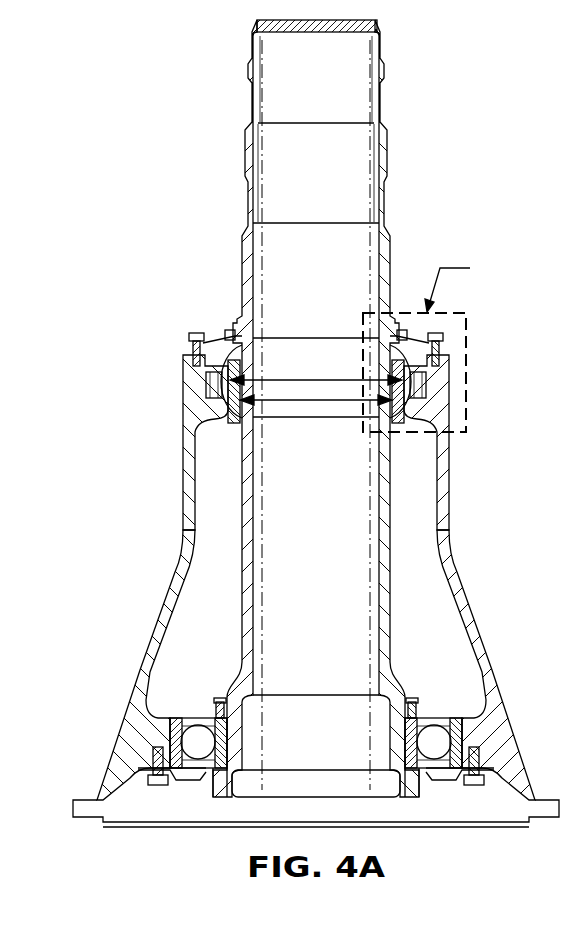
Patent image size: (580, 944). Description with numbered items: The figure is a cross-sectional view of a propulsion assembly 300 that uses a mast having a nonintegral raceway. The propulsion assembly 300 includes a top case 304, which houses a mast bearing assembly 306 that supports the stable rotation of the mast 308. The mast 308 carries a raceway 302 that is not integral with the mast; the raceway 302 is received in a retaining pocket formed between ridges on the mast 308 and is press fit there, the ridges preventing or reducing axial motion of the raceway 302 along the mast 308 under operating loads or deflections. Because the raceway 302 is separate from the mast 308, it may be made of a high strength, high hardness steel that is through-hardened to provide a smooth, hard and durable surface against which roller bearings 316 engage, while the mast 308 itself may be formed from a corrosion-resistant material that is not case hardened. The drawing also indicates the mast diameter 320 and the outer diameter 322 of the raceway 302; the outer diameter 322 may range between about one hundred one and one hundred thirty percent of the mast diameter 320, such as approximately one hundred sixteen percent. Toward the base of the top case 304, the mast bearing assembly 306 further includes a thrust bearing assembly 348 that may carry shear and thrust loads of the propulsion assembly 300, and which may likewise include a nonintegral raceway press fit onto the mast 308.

The propulsion assembly 300 is at (110, 276).
The nonintegral raceway 302 is at (213, 356).
The top case 304 is at (170, 581).
The mast bearing assembly 306 is at (218, 430).
The mast 308 is at (245, 155).
The roller bearings 316 is at (418, 388).
The mast diameter 320 is at (312, 403).
The outer diameter 322 is at (323, 378).
The thrust bearing assembly 348 is at (188, 792).